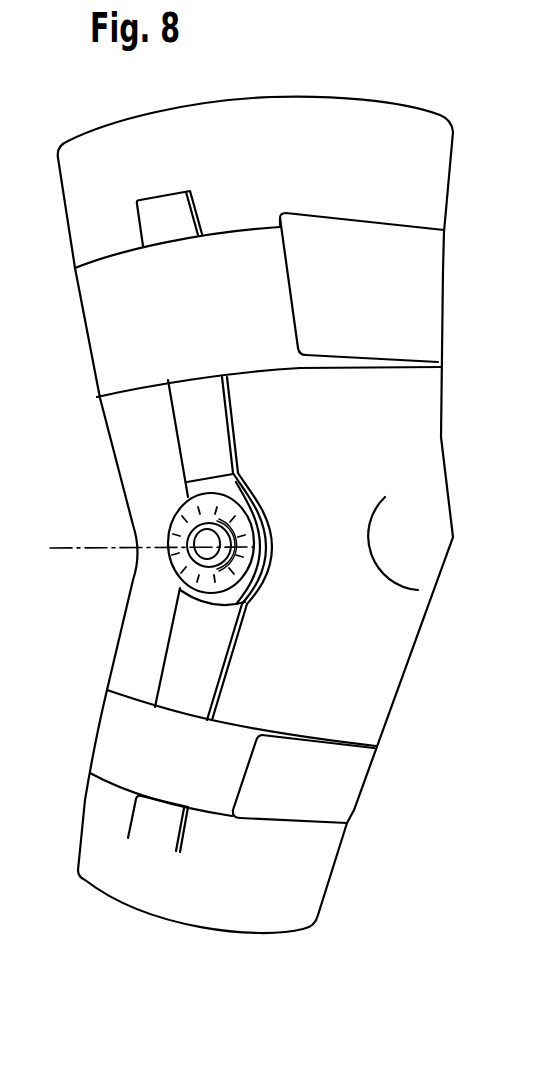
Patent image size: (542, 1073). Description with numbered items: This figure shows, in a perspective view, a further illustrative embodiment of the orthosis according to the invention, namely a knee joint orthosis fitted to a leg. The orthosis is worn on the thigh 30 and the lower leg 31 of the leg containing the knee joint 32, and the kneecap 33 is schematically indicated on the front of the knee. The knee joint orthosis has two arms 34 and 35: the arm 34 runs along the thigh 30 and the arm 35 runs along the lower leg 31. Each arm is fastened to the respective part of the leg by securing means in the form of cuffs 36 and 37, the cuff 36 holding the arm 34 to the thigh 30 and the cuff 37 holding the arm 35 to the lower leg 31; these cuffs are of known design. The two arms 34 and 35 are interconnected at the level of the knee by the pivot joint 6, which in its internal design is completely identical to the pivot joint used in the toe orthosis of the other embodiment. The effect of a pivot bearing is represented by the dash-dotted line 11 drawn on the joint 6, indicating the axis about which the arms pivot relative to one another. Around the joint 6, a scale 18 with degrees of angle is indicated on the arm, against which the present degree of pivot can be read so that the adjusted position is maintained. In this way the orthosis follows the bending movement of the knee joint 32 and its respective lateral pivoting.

The pivot joint 6 is at (168, 574).
The dash-dotted line 11 is at (68, 548).
The scale 18 is at (200, 510).
The thigh 30 is at (373, 123).
The lower leg 31 is at (244, 912).
The knee joint 32 is at (318, 564).
The kneecap 33 is at (418, 538).
The arm 34 is at (155, 217).
The arm 35 is at (183, 668).
The cuff 36 is at (107, 321).
The cuff 37 is at (120, 753).